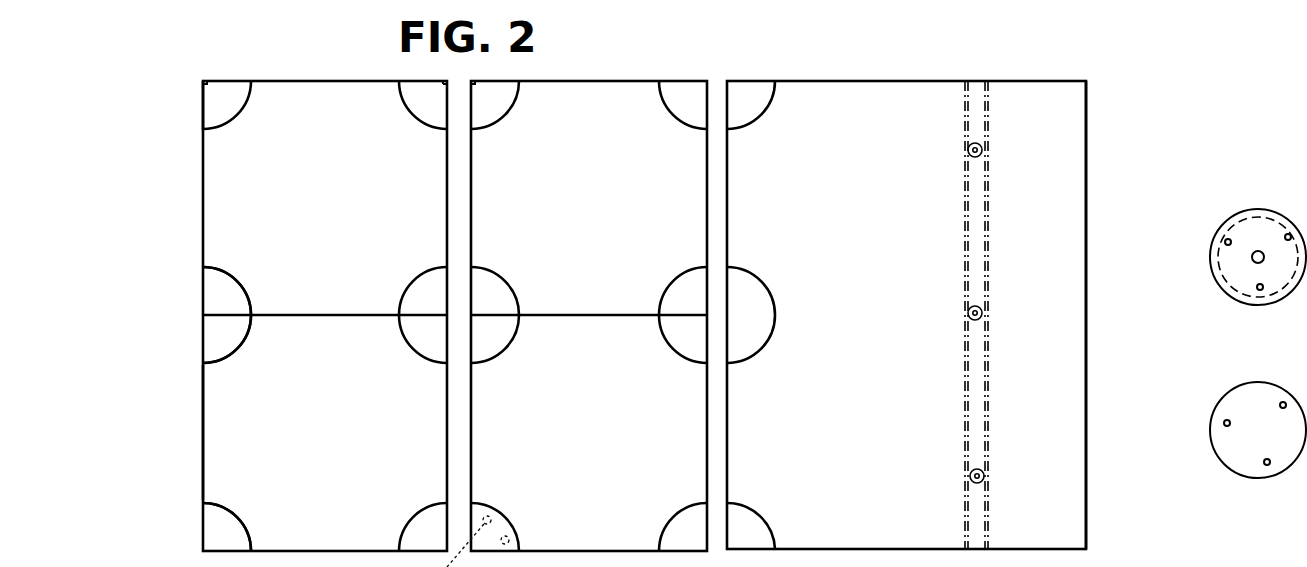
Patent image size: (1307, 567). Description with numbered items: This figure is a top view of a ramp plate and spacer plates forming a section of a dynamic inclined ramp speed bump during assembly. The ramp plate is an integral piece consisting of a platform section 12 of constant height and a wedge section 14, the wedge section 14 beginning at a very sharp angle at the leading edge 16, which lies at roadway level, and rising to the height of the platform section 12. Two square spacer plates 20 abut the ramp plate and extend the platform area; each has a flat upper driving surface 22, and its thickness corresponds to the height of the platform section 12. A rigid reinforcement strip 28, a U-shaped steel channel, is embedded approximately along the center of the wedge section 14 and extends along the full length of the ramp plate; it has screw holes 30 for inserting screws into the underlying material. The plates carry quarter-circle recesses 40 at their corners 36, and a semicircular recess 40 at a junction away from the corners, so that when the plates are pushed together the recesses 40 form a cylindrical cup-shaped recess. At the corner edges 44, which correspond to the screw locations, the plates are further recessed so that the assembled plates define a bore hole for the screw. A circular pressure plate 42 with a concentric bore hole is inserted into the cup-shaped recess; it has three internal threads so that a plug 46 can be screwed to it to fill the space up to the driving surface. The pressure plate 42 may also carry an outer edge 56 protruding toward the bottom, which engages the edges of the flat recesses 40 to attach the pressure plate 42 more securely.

The platform section 12 is at (779, 195).
The wedge section 14 is at (1047, 292).
The leading edge 16 is at (1088, 241).
The spacer plate 20 is at (352, 177).
The upper driving surface 22 is at (228, 394).
The reinforcement strip 28 is at (988, 402).
The screw hole 30 is at (984, 478).
The corner 36 is at (205, 88).
The recess 40 is at (218, 289).
The pressure plate 42 is at (1266, 214).
The corner edge 44 is at (498, 65).
The plug 46 is at (1283, 452).
The outer edge 56 is at (1228, 294).